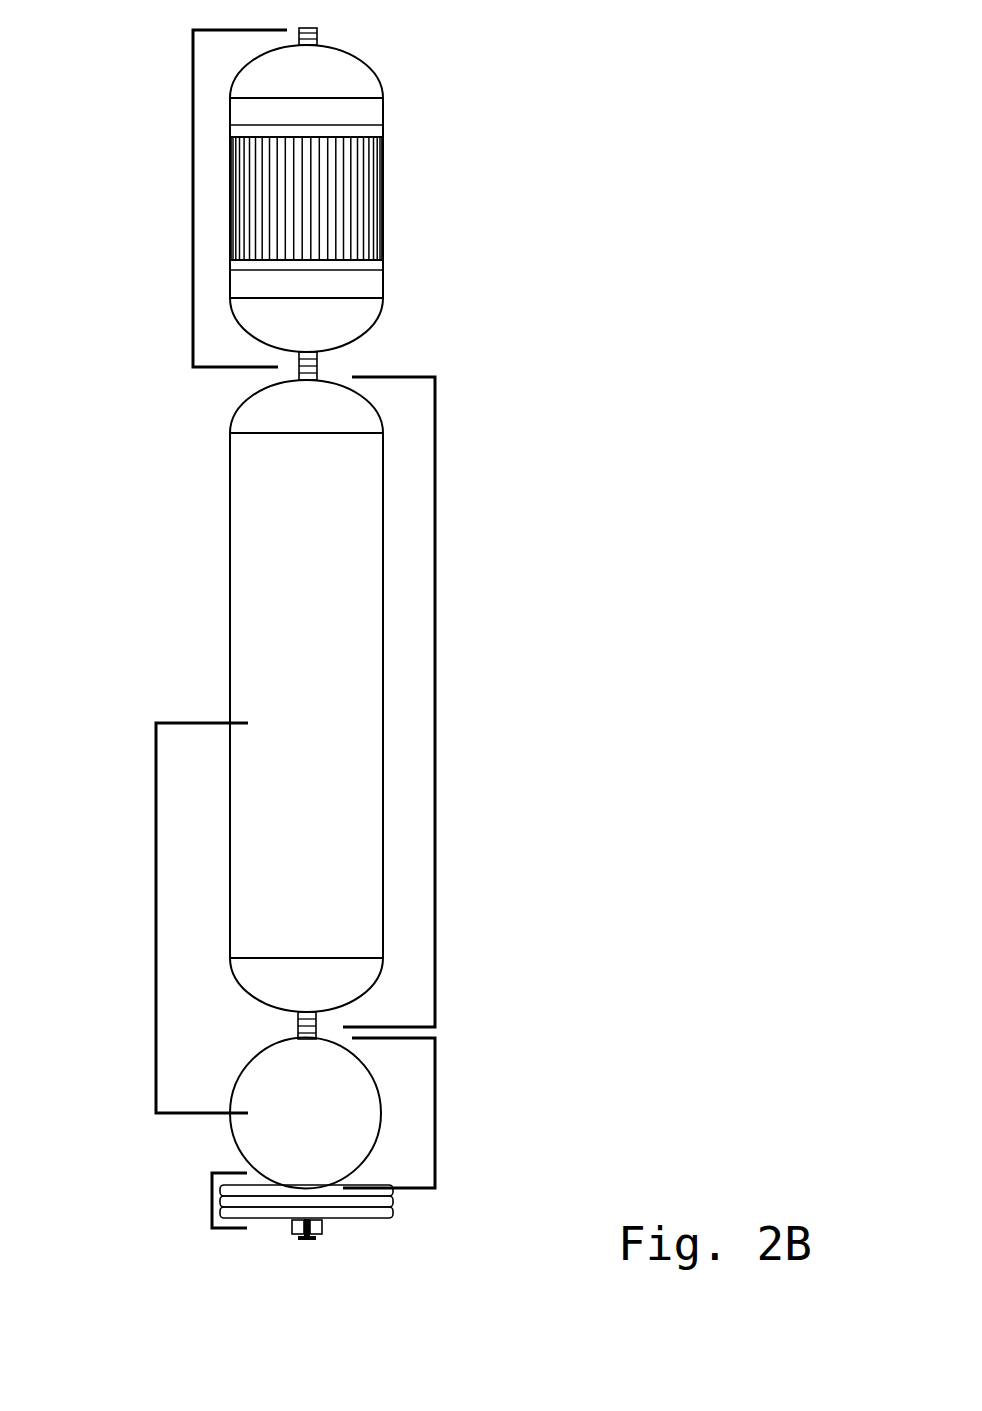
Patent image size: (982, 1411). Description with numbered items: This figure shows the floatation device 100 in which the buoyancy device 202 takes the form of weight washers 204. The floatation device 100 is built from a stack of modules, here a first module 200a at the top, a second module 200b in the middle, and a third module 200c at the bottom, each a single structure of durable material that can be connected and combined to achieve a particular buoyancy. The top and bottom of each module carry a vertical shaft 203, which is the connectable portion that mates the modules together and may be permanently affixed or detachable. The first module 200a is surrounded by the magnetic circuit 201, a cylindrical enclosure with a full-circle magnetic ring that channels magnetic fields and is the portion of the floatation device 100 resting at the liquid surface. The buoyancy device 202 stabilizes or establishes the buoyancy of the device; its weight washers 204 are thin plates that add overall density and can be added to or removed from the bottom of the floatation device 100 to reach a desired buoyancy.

The floatation device 100 is at (442, 190).
The first module 200a is at (171, 198).
The second module 200b is at (397, 702).
The third module 200c is at (410, 1113).
The magnetic circuit 201 is at (368, 198).
The buoyancy device 202 is at (139, 918).
The vertical shaft 203 is at (323, 552).
The weight washer 204 is at (242, 1204).